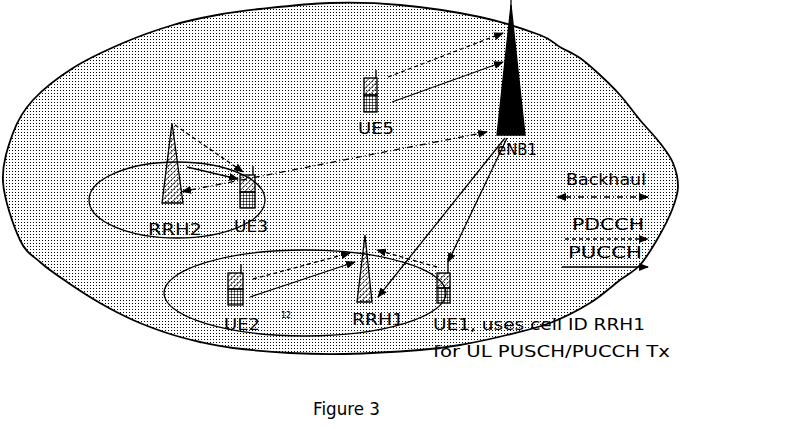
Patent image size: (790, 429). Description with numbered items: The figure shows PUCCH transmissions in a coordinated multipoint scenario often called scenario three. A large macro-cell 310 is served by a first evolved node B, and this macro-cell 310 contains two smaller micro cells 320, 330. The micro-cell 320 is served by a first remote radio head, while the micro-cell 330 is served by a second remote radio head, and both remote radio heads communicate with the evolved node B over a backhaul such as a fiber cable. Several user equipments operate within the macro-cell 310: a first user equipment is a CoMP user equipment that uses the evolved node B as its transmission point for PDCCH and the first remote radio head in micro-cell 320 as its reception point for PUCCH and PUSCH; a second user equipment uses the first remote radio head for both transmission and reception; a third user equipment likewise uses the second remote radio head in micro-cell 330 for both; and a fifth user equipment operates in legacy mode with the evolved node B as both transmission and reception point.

The macro-cell 310 is at (280, 61).
The micro-cell 320 is at (334, 303).
The micro-cell 330 is at (150, 205).